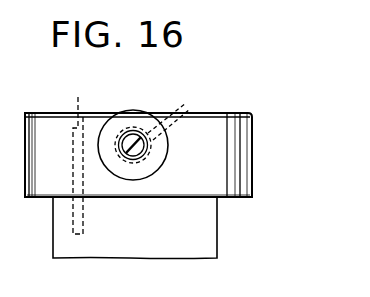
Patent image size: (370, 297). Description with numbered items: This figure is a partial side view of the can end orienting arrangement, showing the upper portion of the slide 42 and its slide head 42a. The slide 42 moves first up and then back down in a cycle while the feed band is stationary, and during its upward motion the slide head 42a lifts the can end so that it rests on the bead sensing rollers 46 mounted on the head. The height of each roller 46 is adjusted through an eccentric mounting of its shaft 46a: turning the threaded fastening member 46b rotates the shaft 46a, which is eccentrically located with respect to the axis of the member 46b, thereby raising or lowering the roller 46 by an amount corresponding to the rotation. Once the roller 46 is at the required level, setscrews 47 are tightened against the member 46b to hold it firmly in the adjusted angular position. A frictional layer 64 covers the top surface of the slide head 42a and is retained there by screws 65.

The slide 42 is at (212, 237).
The slide head 42a is at (242, 172).
The bead sensing roller 46 is at (132, 117).
The shaft 46a is at (132, 153).
The threaded fastening member 46b is at (166, 152).
The setscrew 47 is at (193, 91).
The frictional layer 64 is at (228, 113).
The screw 65 is at (68, 153).